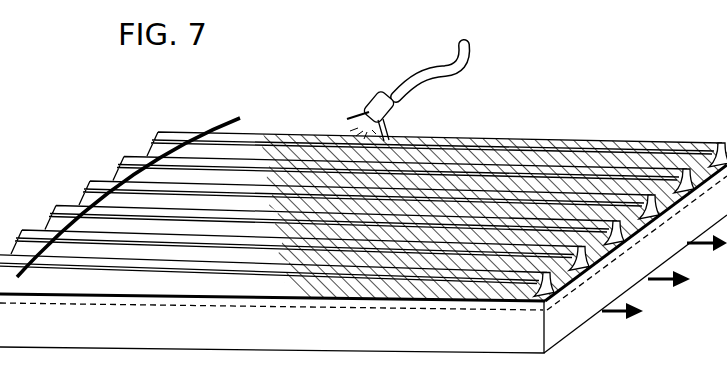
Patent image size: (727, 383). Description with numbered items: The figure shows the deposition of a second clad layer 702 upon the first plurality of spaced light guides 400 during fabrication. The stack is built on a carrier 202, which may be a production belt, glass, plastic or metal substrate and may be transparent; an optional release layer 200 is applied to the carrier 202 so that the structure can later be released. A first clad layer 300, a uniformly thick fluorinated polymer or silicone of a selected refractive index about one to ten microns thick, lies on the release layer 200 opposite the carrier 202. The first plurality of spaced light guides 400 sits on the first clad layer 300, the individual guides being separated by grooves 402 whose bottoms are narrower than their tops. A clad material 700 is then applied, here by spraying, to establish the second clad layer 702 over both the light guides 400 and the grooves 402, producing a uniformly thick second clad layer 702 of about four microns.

The release layer 200 is at (556, 308).
The carrier 202 is at (239, 340).
The first clad layer 300 is at (443, 301).
The first plurality of spaced light guides 400 is at (343, 201).
The grooves 402 is at (140, 141).
The clad material 700 is at (343, 119).
The second clad layer 702 is at (570, 143).